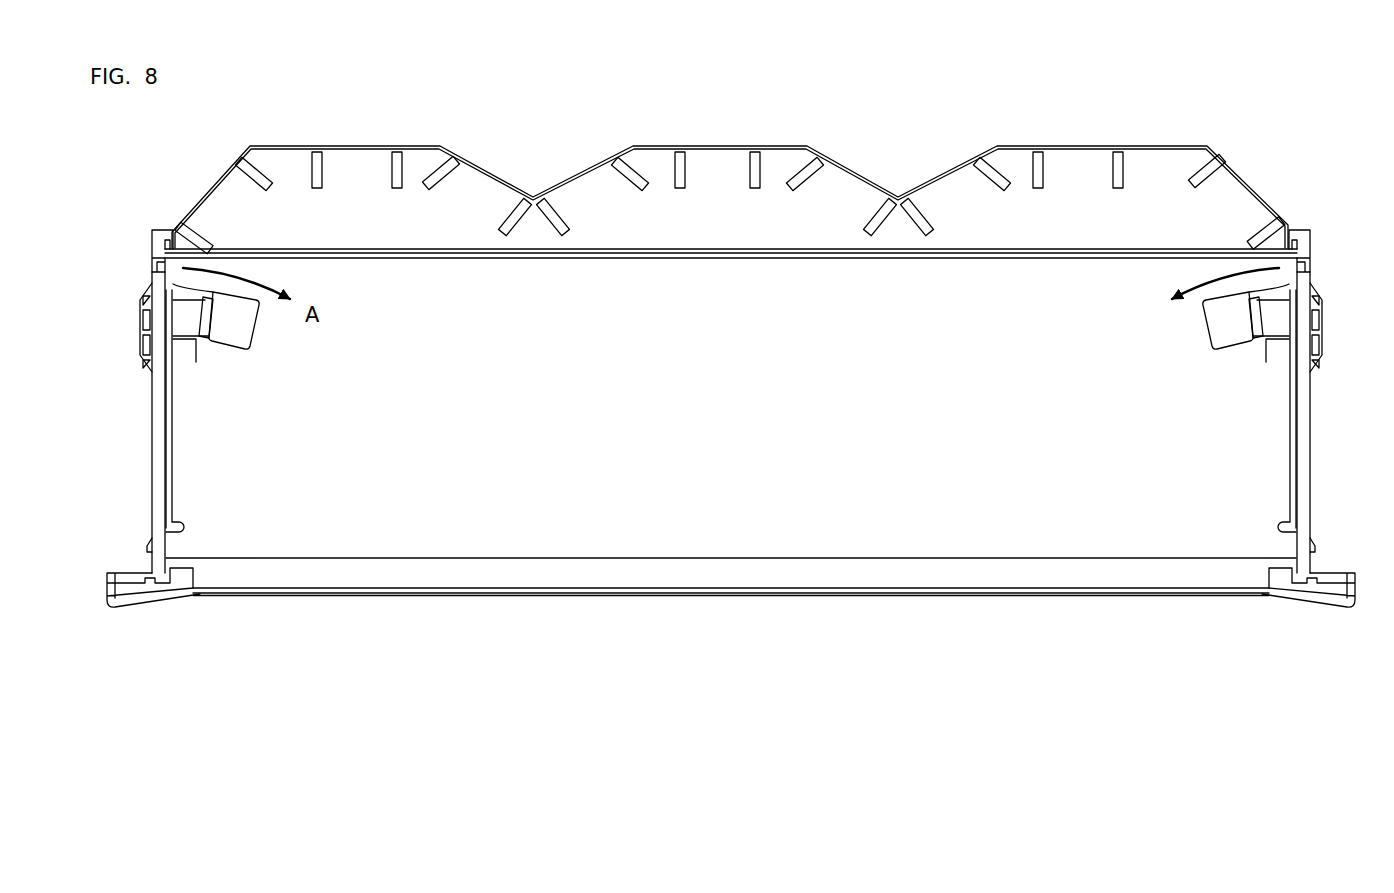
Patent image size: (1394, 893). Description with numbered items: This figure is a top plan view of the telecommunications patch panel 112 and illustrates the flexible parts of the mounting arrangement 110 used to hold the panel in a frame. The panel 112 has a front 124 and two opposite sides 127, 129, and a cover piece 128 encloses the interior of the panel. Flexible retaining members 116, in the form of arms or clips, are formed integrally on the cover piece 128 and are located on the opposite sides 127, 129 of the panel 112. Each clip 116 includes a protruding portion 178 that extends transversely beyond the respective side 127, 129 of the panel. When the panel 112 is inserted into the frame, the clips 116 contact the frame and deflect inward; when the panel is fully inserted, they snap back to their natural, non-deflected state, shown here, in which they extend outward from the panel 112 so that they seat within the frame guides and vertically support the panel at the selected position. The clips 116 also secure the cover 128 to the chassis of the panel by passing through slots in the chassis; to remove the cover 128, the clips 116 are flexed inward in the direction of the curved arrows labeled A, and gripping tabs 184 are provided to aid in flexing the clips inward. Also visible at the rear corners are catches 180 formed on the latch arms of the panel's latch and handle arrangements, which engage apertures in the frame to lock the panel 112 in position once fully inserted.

The mounting arrangement 110 is at (131, 268).
The panel 112 is at (874, 624).
The flexible retaining members 116 is at (141, 338).
The front 124 is at (258, 592).
The first opposite side 127 is at (150, 480).
The cover piece 128 is at (722, 413).
The second opposite side 129 is at (1311, 472).
The protruding portion 178 is at (143, 358).
The catch 180 is at (144, 546).
The gripping tab 184 is at (187, 316).